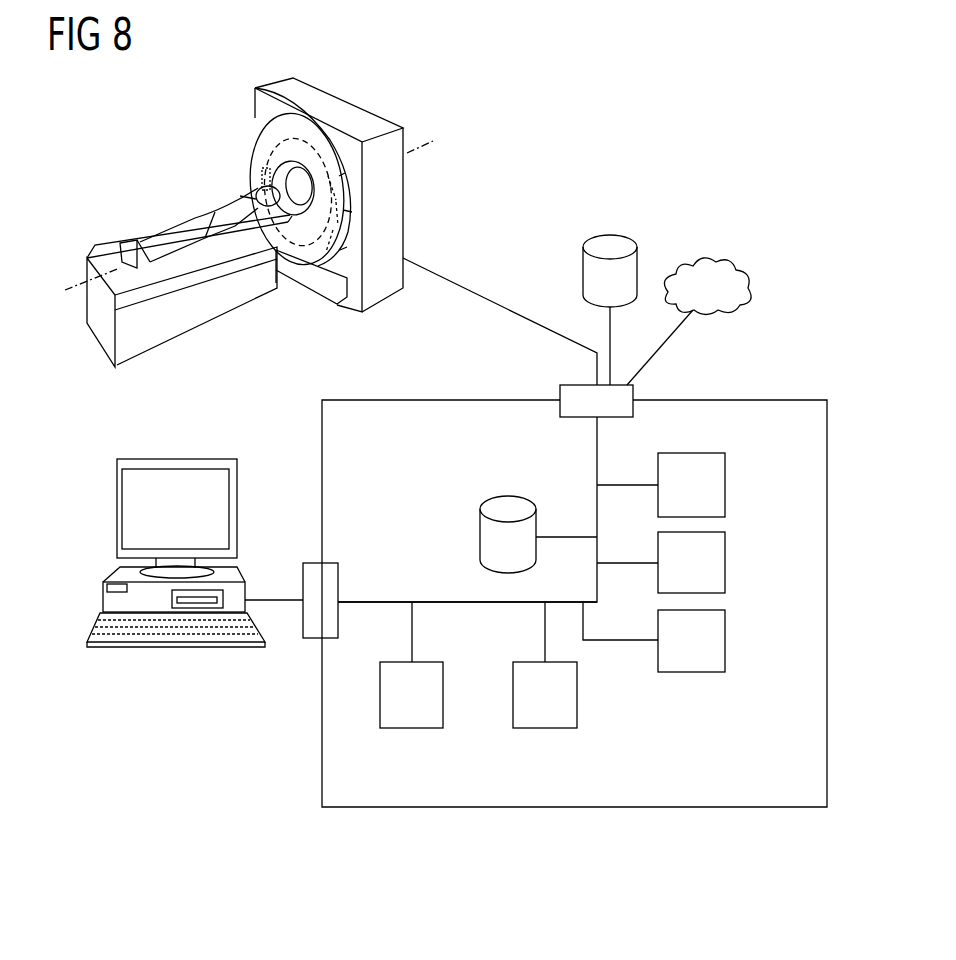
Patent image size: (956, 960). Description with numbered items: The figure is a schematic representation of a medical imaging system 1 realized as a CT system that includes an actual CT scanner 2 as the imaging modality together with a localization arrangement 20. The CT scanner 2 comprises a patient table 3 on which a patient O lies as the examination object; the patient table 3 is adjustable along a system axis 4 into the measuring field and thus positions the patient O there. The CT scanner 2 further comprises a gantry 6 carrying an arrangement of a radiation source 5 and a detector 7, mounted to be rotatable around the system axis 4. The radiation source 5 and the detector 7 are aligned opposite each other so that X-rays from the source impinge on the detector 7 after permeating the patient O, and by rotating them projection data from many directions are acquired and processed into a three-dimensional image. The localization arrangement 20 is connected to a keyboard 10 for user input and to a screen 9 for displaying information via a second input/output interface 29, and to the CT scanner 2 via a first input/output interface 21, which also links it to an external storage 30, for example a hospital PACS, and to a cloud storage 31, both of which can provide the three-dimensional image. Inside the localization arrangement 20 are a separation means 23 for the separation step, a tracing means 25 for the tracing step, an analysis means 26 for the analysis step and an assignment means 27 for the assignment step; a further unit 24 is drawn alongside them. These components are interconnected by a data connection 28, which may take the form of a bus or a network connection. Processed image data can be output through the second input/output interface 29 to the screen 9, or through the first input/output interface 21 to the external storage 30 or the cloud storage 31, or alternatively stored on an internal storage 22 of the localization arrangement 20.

The medical imaging system 1 is at (756, 145).
The CT scanner 2 is at (252, 330).
The patient table 3 is at (123, 247).
The system axis 4 is at (72, 287).
The patient O is at (252, 192).
The radiation source 5 is at (267, 172).
The gantry 6 is at (290, 143).
The detector 7 is at (352, 215).
The screen 9 is at (177, 457).
The keyboard 10 is at (175, 648).
The localization arrangement 20 is at (735, 397).
The first input/output interface 21 is at (558, 390).
The internal storage 22 is at (507, 493).
The separation means 23 is at (727, 483).
The processing unit 24 is at (727, 561).
The tracing means 25 is at (727, 641).
The analysis means 26 is at (545, 730).
The assignment means 27 is at (412, 730).
The data connection 28 is at (390, 600).
The second input/output interface 29 is at (332, 563).
The external storage 30 is at (610, 232).
The cloud storage 31 is at (752, 287).